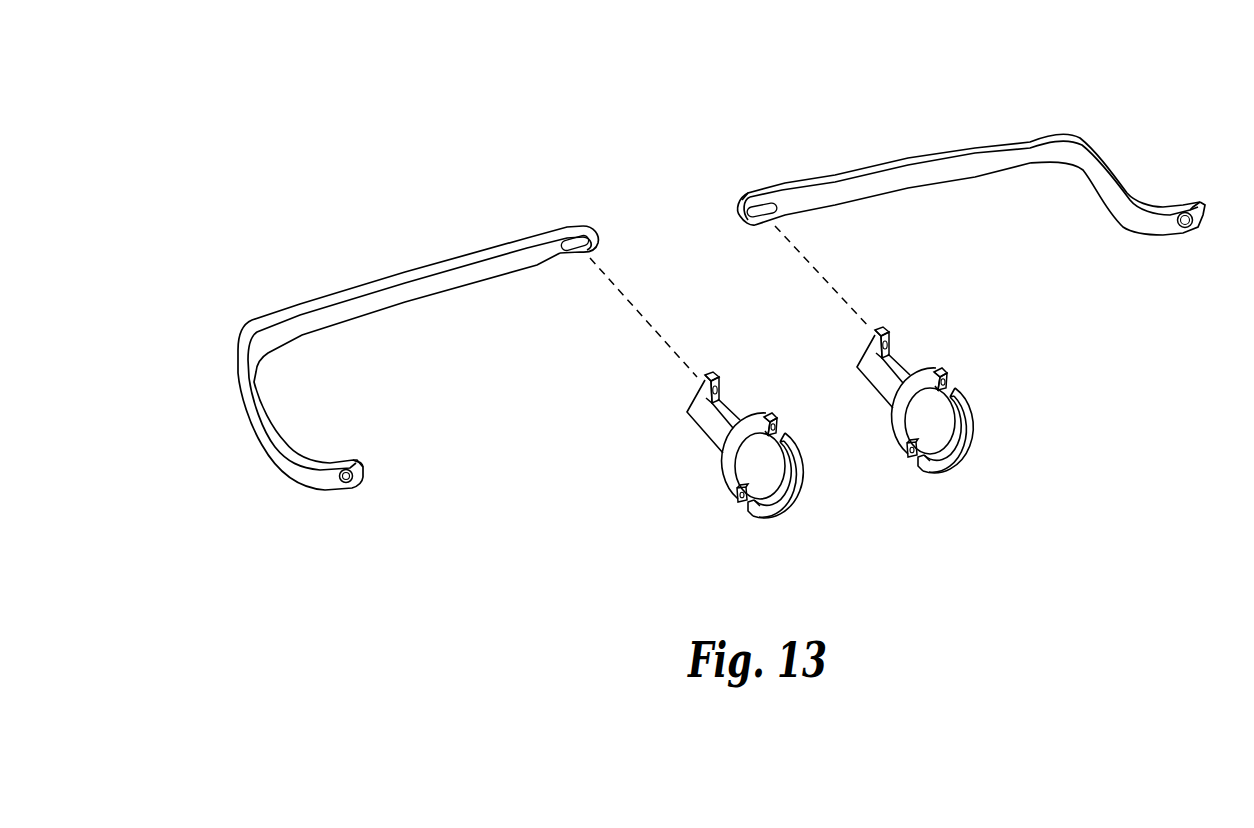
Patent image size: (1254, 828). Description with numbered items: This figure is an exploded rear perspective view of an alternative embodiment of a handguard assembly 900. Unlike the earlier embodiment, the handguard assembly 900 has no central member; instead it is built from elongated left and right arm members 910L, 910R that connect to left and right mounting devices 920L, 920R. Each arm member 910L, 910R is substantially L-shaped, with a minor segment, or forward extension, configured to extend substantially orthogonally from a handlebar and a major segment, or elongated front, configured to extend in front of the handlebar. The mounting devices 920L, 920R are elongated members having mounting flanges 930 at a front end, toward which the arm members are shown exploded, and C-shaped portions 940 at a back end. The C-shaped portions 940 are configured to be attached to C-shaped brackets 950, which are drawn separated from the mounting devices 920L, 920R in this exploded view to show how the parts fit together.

The handguard assembly 900 is at (348, 161).
The left arm member 910L is at (392, 294).
The right arm member 910R is at (910, 173).
The left mounting device 920L is at (703, 417).
The right mounting device 920R is at (903, 367).
The mounting flange 930 is at (870, 332).
The C-shaped portion 940 is at (727, 480).
The C-shaped bracket 950 is at (930, 467).